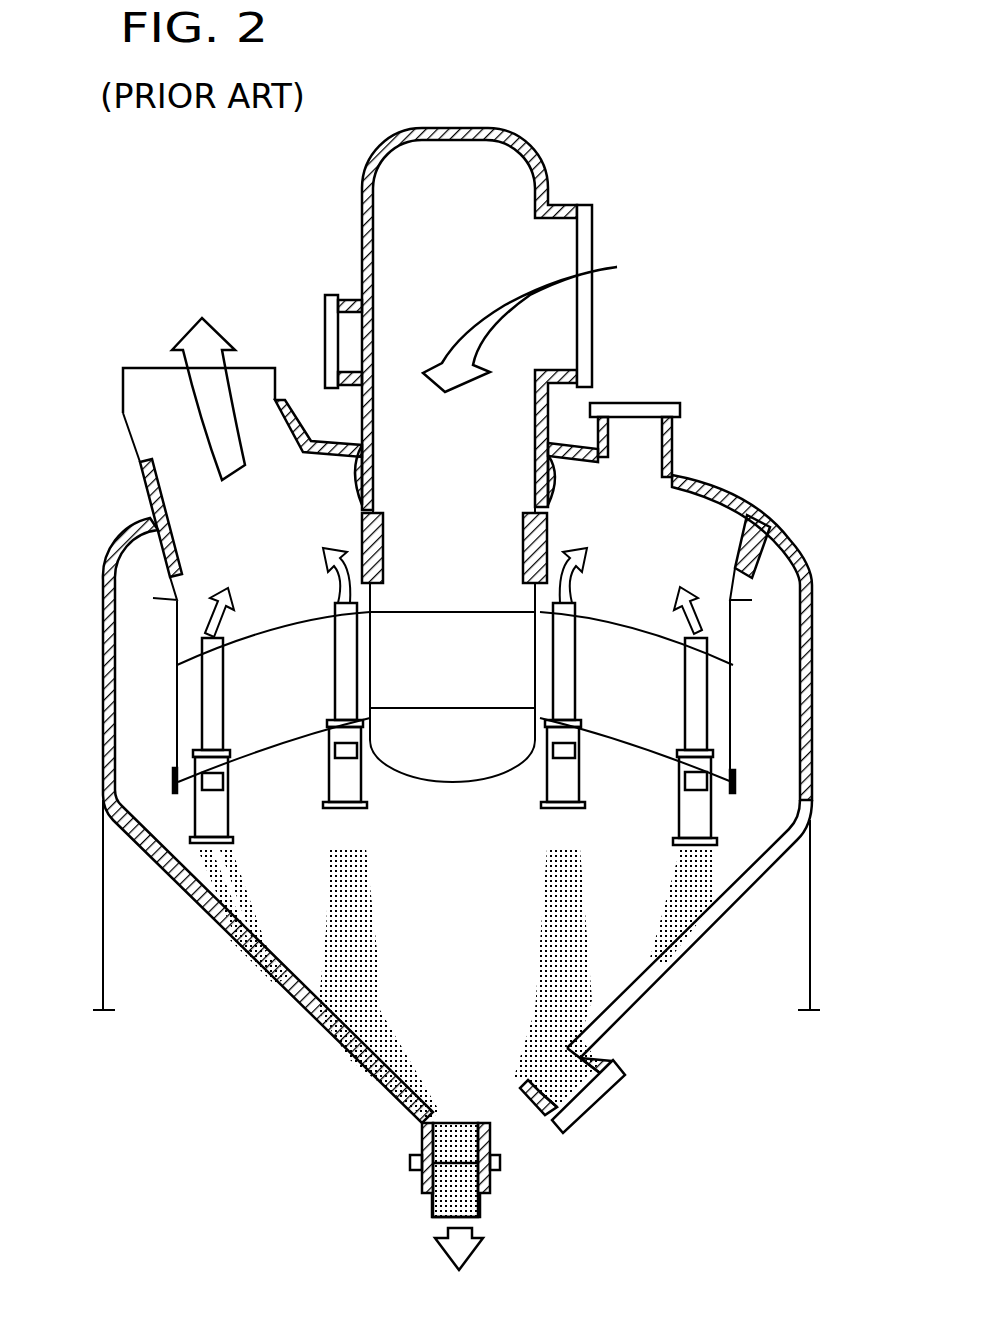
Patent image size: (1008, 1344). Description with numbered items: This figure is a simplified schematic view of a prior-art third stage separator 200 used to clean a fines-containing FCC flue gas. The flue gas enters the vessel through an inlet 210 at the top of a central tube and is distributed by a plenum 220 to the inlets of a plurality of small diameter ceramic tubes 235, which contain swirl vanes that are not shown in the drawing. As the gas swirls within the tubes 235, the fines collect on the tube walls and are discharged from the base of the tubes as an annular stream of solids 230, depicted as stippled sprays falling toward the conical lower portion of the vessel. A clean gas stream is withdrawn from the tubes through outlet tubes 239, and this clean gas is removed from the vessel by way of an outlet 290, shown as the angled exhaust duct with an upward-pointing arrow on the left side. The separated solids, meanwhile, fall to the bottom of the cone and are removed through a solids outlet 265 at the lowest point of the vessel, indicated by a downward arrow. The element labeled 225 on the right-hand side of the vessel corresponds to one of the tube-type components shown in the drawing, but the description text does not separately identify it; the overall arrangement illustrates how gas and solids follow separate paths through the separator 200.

The third stage separator 200 is at (722, 488).
The inlet 210 is at (560, 214).
The plenum 220 is at (298, 690).
The atomizer nozzle 225 is at (675, 793).
The annular stream of solids 230 is at (273, 890).
The small diameter ceramic tubes 235 is at (545, 788).
The outlet tubes 239 is at (227, 638).
The solids outlet 265 is at (490, 1182).
The outlet 290 is at (123, 410).